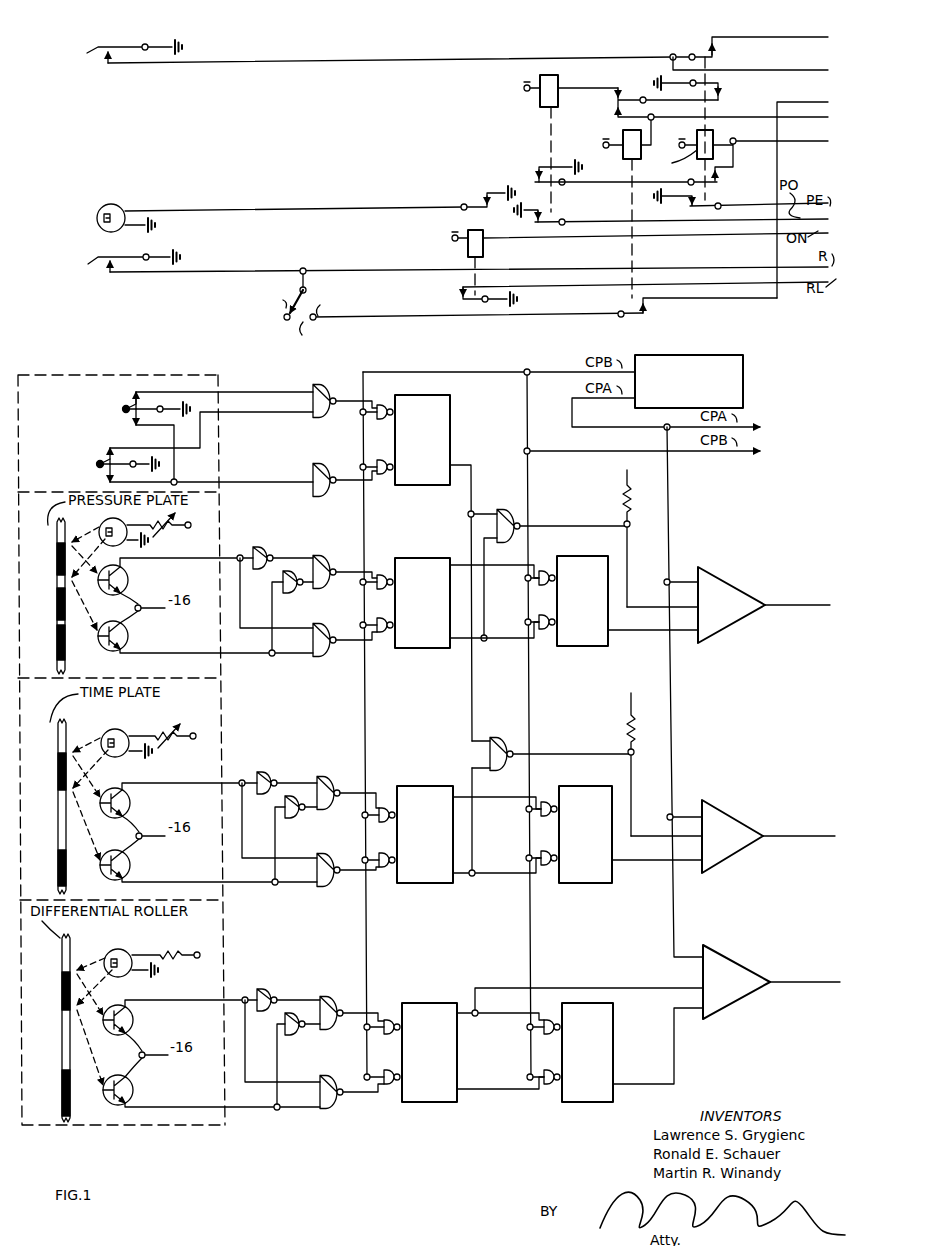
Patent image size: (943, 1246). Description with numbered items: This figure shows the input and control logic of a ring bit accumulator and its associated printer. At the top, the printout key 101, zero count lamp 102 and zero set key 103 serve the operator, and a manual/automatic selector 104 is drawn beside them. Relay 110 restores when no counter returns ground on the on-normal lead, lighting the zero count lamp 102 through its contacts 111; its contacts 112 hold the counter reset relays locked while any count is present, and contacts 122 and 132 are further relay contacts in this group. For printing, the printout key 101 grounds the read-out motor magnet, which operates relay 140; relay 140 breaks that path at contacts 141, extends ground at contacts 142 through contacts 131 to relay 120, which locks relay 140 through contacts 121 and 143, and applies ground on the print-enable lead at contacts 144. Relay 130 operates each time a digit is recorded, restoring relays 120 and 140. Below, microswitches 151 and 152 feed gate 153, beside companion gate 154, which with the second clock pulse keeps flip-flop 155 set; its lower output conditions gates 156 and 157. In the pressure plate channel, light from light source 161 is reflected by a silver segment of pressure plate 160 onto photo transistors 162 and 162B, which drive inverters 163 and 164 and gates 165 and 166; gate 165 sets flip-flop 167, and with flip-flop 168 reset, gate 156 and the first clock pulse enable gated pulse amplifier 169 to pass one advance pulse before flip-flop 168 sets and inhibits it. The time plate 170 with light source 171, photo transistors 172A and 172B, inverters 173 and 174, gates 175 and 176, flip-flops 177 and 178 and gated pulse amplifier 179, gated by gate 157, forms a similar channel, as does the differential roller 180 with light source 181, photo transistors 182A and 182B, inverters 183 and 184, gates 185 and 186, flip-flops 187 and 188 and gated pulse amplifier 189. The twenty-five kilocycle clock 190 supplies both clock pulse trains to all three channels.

The printout key 101 is at (95, 58).
The zero count lamp 102 is at (97, 210).
The zero set key 103 is at (98, 265).
The manual/automatic selector switch 104 is at (303, 328).
The relay 110 is at (468, 250).
The contacts 111 is at (484, 199).
The contacts 112 is at (460, 292).
The relay 120 is at (558, 82).
The contacts 121 is at (535, 178).
The relay contact 122 is at (535, 222).
The relay 130 is at (623, 159).
The contacts 131 is at (615, 101).
The relay contact 132 is at (648, 315).
The relay 140 is at (713, 138).
The contacts 141 is at (720, 55).
The contacts 142 is at (722, 83).
The contacts 143 is at (718, 178).
The contacts 144 is at (712, 205).
The microswitch 151 is at (122, 407).
The microswitch 152 is at (96, 462).
The gate 153 is at (329, 389).
The NAND gate 154 is at (329, 467).
The flip-flop 155 is at (405, 440).
The gate 156 is at (511, 513).
The gate 157 is at (507, 737).
The pressure plate 160 is at (57, 613).
The light source 161 is at (109, 524).
The photo transistor 162 is at (133, 585).
The photo transistor 162B is at (135, 640).
The inverter circuit 163 is at (258, 546).
The inverter circuit 164 is at (290, 593).
The gate 165 is at (326, 561).
The gate 166 is at (317, 657).
The flip-flop 167 is at (449, 603).
The flip-flop 168 is at (611, 601).
The gated pulse amplifier 169 is at (728, 548).
The time plate 170 is at (58, 826).
The lamp 171 is at (110, 733).
The photo detector 172A is at (136, 808).
The photo detector 172B is at (136, 872).
The inverter 173 is at (262, 771).
The inverter 174 is at (292, 818).
The NAND gate 175 is at (330, 783).
The NAND gate 176 is at (320, 888).
The flip-flop 177 is at (451, 834).
The flip-flop 178 is at (614, 834).
The gated pulse amplifier 179 is at (731, 778).
The differential roller 180 is at (62, 1048).
The lamp 181 is at (114, 949).
The photo detector 182A is at (138, 1025).
The photo detector 182B is at (138, 1097).
The inverter 183 is at (264, 988).
The inverter 184 is at (295, 1035).
The NAND gate 185 is at (333, 1003).
The NAND gate 186 is at (325, 1110).
The flip-flop 187 is at (533, 1045).
The flip-flop 188 is at (615, 1052).
The gated pulse amplifier 189 is at (771, 981).
The 25 KC clock 190 is at (689, 382).